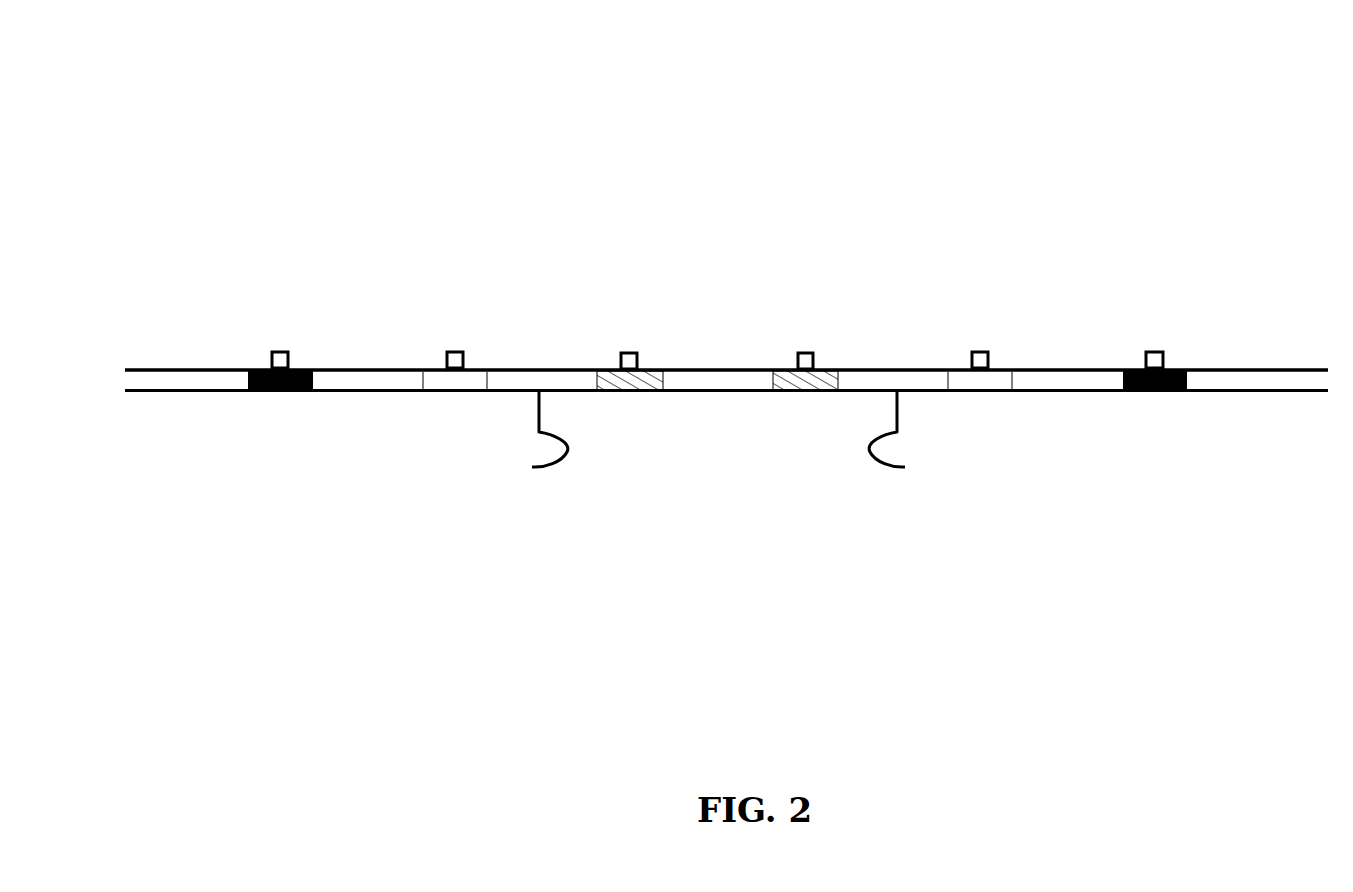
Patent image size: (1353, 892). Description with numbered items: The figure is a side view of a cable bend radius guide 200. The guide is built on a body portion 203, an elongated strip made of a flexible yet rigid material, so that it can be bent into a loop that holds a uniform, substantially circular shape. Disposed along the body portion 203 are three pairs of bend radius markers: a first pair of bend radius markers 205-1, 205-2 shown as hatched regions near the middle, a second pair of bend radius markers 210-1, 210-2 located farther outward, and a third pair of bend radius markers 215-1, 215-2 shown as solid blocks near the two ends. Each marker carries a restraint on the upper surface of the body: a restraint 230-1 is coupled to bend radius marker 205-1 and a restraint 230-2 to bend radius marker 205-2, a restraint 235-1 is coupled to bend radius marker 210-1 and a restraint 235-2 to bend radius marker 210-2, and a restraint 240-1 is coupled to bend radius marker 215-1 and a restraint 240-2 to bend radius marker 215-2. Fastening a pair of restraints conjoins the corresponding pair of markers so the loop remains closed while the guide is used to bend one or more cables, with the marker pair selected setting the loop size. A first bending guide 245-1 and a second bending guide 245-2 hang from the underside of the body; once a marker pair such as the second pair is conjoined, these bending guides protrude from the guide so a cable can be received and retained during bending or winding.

The cable bend radius guide 200 is at (339, 124).
The body portion 203 is at (147, 373).
The bend radius marker 205-1 is at (627, 392).
The bend radius marker 205-2 is at (792, 392).
The bend radius marker 210-1 is at (447, 392).
The bend radius marker 210-2 is at (987, 392).
The bend radius marker 215-1 is at (280, 393).
The bend radius marker 215-2 is at (1158, 392).
The restraint 230-1 is at (624, 352).
The restraint 230-2 is at (803, 350).
The restraint 235-1 is at (449, 350).
The restraint 235-2 is at (976, 352).
The restraint 240-1 is at (271, 351).
The restraint 240-2 is at (1153, 352).
The first bending guide 245-1 is at (563, 462).
The second bending guide 245-2 is at (867, 470).